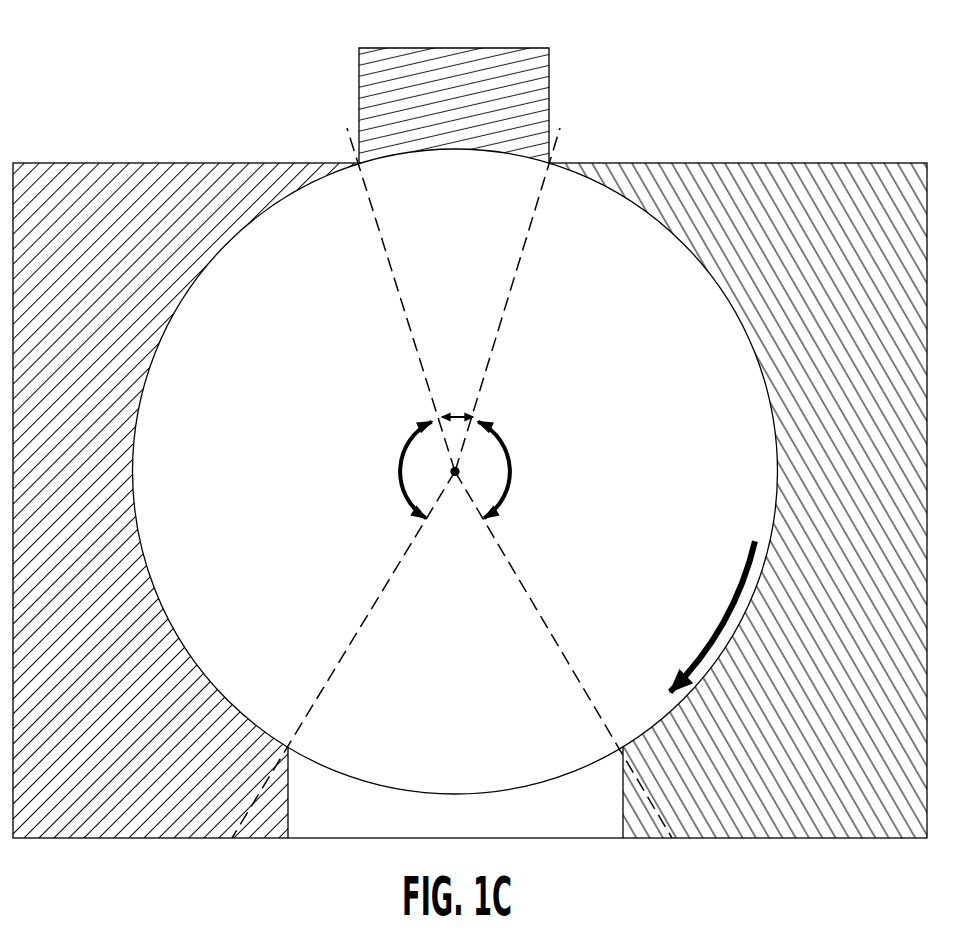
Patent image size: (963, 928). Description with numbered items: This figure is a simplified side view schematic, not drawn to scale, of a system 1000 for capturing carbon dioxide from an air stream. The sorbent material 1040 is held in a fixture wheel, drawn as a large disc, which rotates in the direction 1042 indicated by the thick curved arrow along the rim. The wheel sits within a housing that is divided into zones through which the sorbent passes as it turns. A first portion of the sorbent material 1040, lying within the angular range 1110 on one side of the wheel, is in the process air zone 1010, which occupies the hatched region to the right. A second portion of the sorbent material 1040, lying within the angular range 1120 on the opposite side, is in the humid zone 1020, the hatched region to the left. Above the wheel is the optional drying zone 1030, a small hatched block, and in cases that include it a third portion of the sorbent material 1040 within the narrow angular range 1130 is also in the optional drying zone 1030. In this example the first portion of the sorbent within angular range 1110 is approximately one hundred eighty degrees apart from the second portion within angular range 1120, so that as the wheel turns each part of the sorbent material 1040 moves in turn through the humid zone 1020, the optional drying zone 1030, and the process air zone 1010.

The system for capturing CO2 from an air stream 1000 is at (153, 62).
The process air zone 1010 is at (847, 233).
The humid zone 1020 is at (128, 243).
The optional drying zone 1030 is at (477, 112).
The sorbent material 1040 is at (678, 340).
The direction of rotation 1042 is at (720, 618).
The first angular range 1110 is at (513, 458).
The second angular range 1120 is at (400, 473).
The third angular range 1130 is at (455, 411).